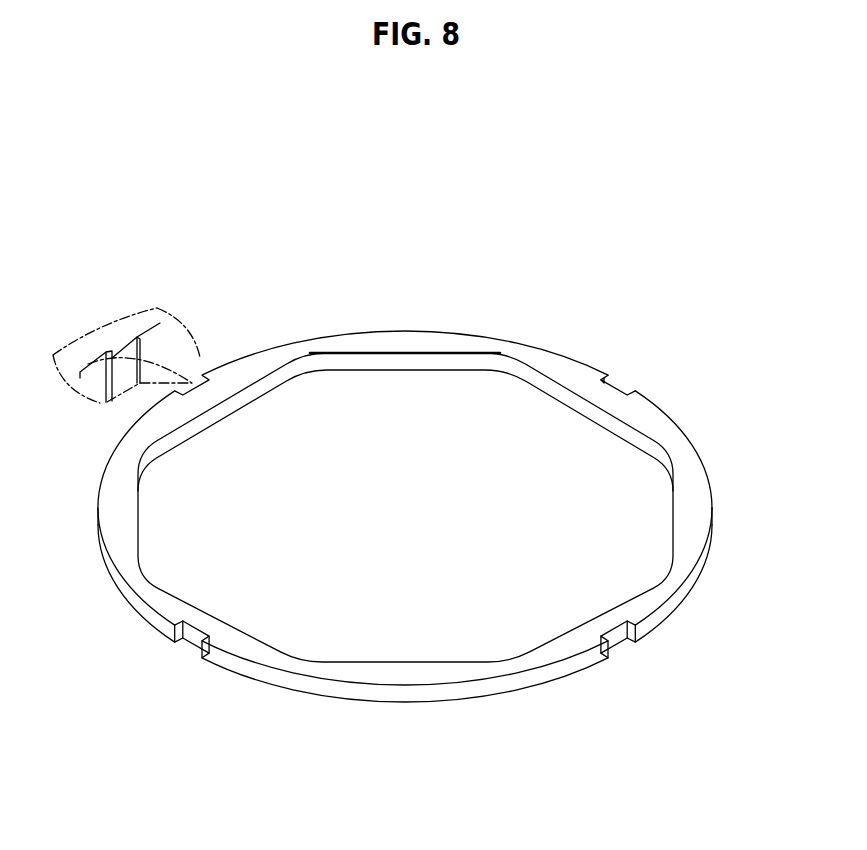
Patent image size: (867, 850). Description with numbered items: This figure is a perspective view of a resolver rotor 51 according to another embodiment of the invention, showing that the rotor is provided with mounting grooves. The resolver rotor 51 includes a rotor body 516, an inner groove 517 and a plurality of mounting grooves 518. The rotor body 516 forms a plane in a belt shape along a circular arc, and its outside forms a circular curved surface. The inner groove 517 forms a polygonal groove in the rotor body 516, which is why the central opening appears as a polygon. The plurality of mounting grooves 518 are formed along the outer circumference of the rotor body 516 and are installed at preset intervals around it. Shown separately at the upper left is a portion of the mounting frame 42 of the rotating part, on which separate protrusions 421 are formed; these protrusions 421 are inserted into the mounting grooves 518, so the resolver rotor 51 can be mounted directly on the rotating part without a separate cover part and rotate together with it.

The resolver rotor 51 is at (457, 273).
The rotor body 516 is at (657, 418).
The inner groove 517 is at (389, 353).
The mounting grooves 518 is at (622, 382).
The mounting frame 42 is at (86, 351).
The protrusions 421 is at (127, 345).